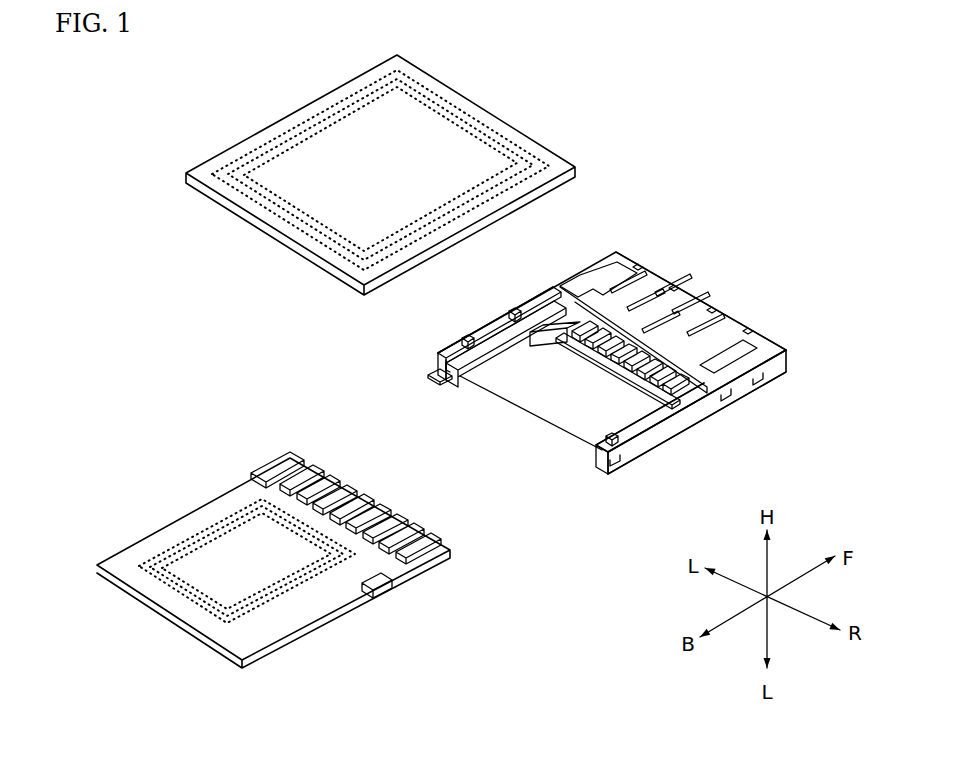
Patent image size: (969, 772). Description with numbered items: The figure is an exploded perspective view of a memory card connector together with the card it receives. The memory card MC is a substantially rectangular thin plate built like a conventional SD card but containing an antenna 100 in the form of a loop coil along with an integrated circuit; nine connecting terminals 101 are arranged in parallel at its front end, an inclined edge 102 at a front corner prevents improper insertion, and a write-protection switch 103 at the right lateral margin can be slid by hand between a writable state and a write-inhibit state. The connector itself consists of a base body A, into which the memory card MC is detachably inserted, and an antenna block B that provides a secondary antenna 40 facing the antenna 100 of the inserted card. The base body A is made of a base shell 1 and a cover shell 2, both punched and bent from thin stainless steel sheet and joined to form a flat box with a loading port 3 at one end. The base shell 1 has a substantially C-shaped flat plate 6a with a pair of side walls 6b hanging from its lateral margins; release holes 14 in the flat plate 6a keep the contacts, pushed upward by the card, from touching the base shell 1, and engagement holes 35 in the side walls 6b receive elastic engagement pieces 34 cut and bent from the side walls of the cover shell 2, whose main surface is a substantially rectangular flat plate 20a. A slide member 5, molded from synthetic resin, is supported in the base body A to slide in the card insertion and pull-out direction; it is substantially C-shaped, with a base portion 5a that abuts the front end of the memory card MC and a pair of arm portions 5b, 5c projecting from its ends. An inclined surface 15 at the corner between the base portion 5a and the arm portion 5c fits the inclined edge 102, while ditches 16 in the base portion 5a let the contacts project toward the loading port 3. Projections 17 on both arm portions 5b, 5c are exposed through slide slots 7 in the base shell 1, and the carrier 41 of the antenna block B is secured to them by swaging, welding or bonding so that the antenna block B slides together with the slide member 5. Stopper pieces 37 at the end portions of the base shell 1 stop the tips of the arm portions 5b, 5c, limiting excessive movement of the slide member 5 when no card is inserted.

The base shell 1 is at (598, 369).
The cover shell 2 is at (573, 440).
The loading port 3 is at (533, 402).
The slide member 5 is at (492, 377).
The base portion 5a is at (617, 365).
The arm portion 5b is at (657, 422).
The arm portion 5c is at (449, 372).
The flat plate 6a is at (614, 256).
The side walls 6b is at (575, 270).
The slide slots 7 is at (543, 298).
The release holes 14 is at (688, 322).
The inclined surface 15 is at (540, 340).
The ditches 16 is at (577, 343).
The projections 17 is at (466, 336).
The flat plate 20a is at (550, 421).
The elastic engagement pieces 34 is at (703, 414).
The engagement holes 35 is at (690, 423).
The stopper pieces 37 is at (447, 375).
The secondary antenna 40 is at (298, 122).
The carrier 41 is at (425, 75).
The antenna 100 is at (200, 530).
The connecting terminals 101 is at (337, 473).
The inclined edge 102 is at (290, 455).
The write-protection switch 103 is at (375, 594).
The base body A is at (598, 366).
The antenna block B is at (380, 155).
The memory card MC is at (297, 541).